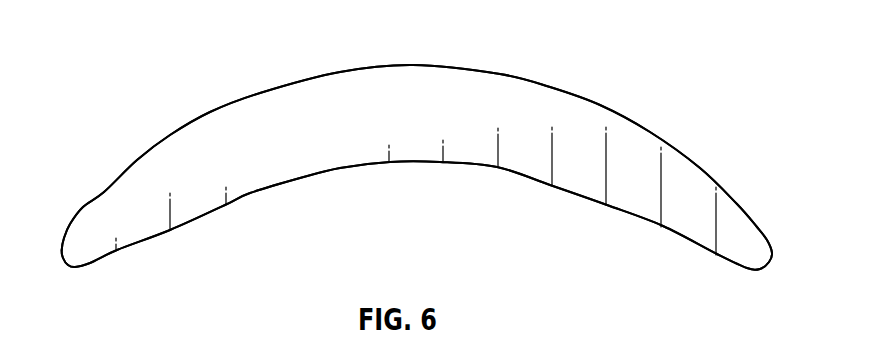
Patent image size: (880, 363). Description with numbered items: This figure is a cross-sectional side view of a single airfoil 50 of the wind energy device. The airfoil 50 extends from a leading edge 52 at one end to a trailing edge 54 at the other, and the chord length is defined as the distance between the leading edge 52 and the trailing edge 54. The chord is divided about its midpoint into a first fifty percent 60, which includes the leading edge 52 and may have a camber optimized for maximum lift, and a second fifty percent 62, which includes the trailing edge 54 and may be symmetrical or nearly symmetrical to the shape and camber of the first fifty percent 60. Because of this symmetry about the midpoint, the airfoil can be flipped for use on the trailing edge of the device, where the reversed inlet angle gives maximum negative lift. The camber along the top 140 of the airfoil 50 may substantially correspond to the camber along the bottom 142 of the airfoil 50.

The airfoil 50 is at (283, 102).
The leading edge 52 is at (64, 262).
The trailing edge 54 is at (772, 261).
The first 50% of the chord length 60 is at (258, 182).
The second 50% of the chord length 62 is at (633, 205).
The top of the airfoil 140 is at (369, 65).
The bottom of the airfoil 142 is at (407, 162).